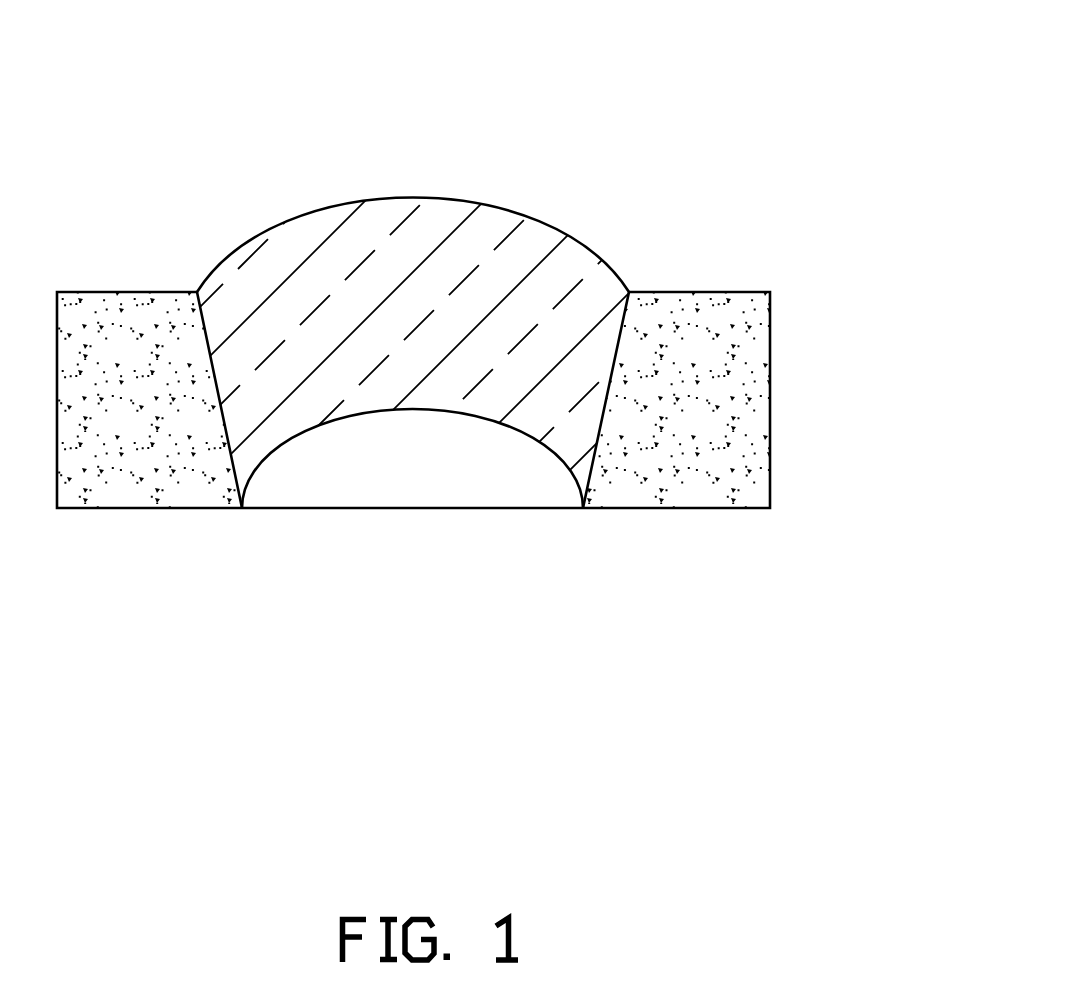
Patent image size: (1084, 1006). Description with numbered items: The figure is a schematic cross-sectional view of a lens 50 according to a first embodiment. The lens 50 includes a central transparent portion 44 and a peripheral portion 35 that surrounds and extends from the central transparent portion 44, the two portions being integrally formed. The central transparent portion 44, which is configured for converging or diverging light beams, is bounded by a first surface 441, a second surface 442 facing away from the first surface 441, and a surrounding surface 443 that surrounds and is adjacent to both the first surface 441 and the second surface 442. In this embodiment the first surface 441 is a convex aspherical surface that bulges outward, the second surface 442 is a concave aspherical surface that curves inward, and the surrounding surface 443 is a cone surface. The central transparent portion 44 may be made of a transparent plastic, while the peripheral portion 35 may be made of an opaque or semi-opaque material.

The lens 50 is at (477, 336).
The central transparent portion 44 is at (452, 336).
The first surface 441 is at (450, 203).
The second surface 442 is at (433, 410).
The surrounding surface 443 is at (597, 445).
The peripheral portion 35 is at (727, 352).